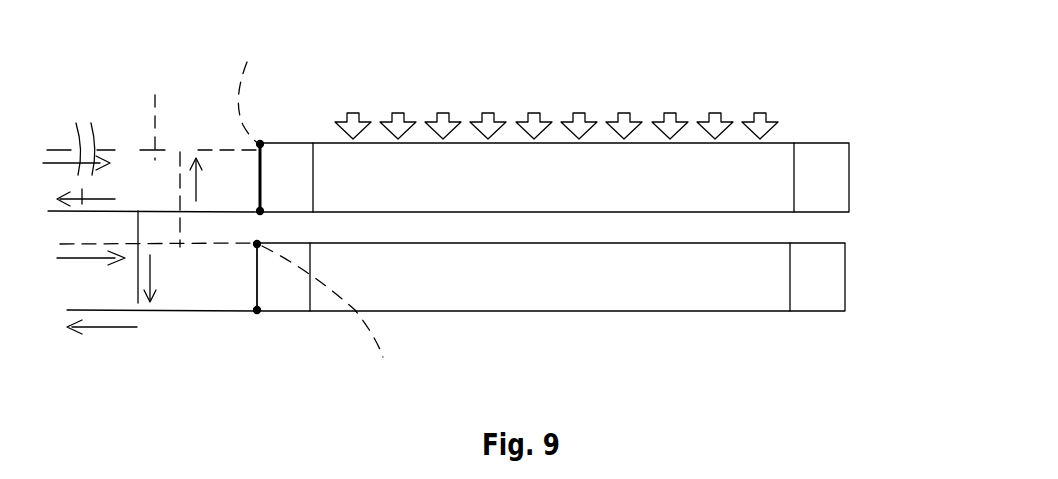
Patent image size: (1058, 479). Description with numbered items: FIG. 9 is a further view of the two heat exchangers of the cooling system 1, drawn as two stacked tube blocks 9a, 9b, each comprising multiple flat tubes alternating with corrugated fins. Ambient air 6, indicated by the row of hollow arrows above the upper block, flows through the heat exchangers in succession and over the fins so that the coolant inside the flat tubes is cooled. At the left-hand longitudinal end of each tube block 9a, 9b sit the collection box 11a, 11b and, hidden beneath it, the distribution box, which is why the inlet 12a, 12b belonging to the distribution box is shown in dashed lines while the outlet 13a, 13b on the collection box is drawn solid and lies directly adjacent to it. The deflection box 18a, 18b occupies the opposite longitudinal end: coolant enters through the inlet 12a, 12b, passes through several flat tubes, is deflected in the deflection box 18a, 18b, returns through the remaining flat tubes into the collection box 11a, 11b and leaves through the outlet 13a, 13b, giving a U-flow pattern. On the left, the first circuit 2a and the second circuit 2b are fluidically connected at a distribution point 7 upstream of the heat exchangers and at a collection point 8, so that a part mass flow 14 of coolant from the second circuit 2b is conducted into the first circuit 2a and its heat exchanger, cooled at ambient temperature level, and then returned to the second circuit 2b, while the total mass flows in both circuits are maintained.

The cooling system 1 is at (847, 78).
The first circuit 2a is at (83, 112).
The second circuit 2b is at (107, 330).
The ambient air 6 is at (533, 118).
The distribution point 7 is at (163, 110).
The collection point 8 is at (139, 303).
The tube block 9a is at (634, 191).
The tube block 9b is at (620, 292).
The collection box 11a is at (289, 160).
The collection box 11b is at (287, 292).
The inlet 12a is at (270, 86).
The inlet 12b is at (343, 318).
The outlet 13a is at (261, 210).
The outlet 13b is at (257, 313).
The part mass flow 14 is at (198, 185).
The deflection box 18a is at (832, 174).
The deflection box 18b is at (830, 279).